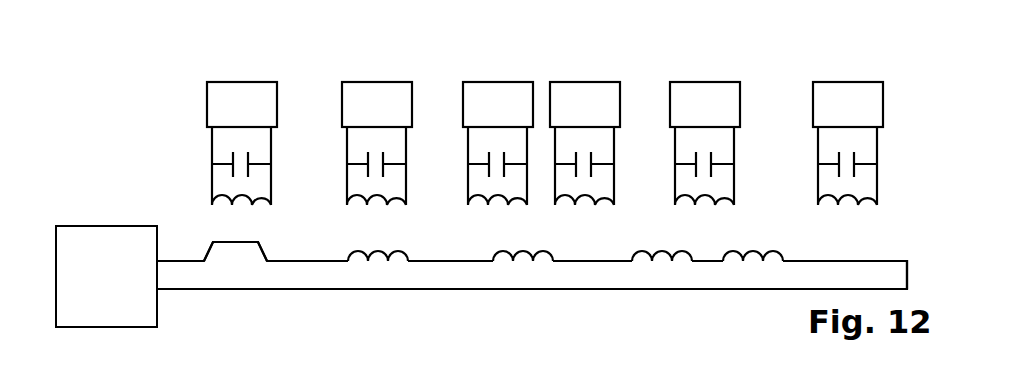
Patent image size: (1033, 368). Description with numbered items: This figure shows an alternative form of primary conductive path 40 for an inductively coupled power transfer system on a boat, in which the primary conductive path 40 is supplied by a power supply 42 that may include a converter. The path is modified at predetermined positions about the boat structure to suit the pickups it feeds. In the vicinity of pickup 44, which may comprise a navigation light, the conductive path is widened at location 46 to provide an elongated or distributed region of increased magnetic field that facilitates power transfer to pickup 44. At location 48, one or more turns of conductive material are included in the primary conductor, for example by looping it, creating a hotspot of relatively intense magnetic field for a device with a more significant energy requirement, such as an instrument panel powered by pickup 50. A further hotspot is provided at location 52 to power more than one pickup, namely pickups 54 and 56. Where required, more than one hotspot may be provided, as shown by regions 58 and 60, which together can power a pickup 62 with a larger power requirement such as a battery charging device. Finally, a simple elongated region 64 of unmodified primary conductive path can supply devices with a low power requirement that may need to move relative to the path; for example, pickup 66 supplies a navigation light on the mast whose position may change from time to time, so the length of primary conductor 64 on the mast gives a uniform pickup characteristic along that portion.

The primary conductive path 40 is at (378, 300).
The power supply 42 is at (123, 226).
The pickup 44 is at (233, 82).
The location of widened conductive path 46 is at (196, 250).
The location with turns of conductive material 48 is at (348, 257).
The pickup 50 is at (369, 82).
The hotspot location 52 is at (493, 257).
The pickup 54 is at (489, 82).
The pickup 56 is at (577, 82).
The hotspot region 58 is at (632, 257).
The hotspot region 60 is at (782, 255).
The pickup 62 is at (693, 82).
The unmodified region of primary conductive path 64 is at (867, 255).
The pickup 66 is at (840, 82).